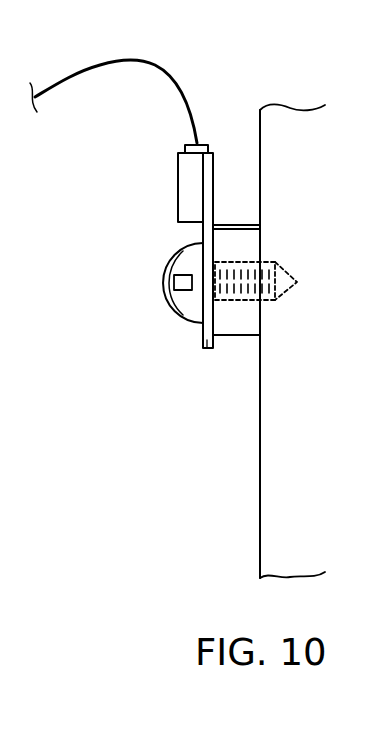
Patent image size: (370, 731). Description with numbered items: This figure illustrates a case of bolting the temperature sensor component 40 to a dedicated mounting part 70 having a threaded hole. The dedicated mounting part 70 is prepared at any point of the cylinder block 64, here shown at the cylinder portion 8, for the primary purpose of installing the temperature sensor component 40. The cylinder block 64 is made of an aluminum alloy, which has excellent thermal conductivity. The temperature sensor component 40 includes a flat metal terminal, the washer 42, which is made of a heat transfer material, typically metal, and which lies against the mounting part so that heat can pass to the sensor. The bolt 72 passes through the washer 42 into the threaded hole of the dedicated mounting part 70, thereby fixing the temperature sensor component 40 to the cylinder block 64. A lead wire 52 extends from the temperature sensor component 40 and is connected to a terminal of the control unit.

The cylinder portion 8 is at (229, 342).
The cylinder block 64 is at (280, 503).
The lead wire 52 is at (122, 60).
The temperature sensor component 40 is at (164, 201).
The washer 42 is at (205, 348).
The dedicated mounting part 70 is at (236, 327).
The bolt 72 is at (200, 322).